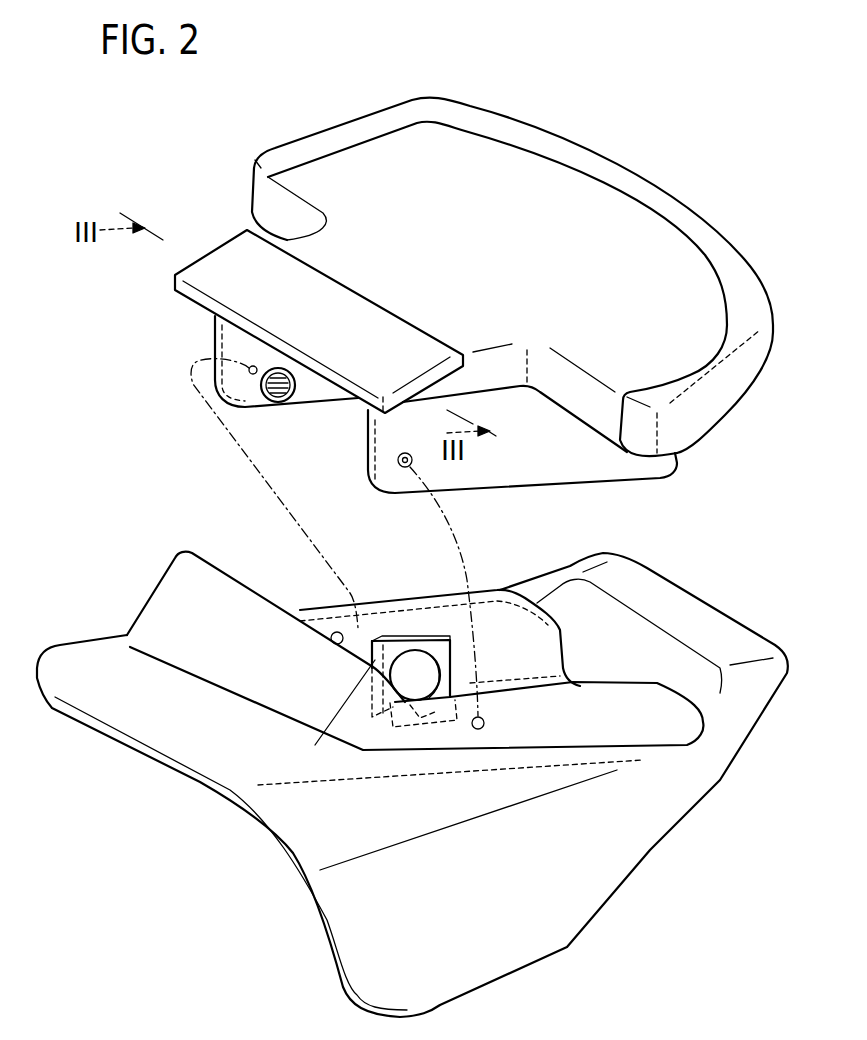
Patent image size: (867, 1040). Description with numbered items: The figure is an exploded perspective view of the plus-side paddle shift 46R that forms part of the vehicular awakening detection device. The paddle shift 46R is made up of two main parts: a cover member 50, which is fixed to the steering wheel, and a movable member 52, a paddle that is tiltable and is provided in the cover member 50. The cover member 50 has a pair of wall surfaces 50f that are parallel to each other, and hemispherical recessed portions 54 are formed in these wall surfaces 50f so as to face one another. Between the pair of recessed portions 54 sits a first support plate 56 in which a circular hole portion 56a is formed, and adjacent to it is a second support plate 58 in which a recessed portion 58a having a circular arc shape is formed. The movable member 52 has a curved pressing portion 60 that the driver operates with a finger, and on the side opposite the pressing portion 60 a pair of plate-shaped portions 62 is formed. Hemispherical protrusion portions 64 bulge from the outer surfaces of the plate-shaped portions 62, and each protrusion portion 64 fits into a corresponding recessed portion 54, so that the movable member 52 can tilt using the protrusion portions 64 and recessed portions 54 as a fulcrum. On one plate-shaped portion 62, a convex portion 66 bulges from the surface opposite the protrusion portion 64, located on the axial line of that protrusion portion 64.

The + side paddle shift 46R is at (380, 71).
The movable member 52 is at (522, 124).
The pressing portion 60 is at (638, 222).
The plate-shaped portions 62 is at (550, 465).
The protrusion portions 64 is at (250, 368).
The convex portion 66 is at (280, 402).
The cover member 50 is at (662, 558).
The wall surfaces 50f is at (471, 618).
The recessed portions 54 is at (334, 630).
The first support plate 56 is at (452, 655).
The hole portion 56a is at (415, 660).
The second support plate 58 is at (378, 725).
The recessed portion 58a is at (442, 722).